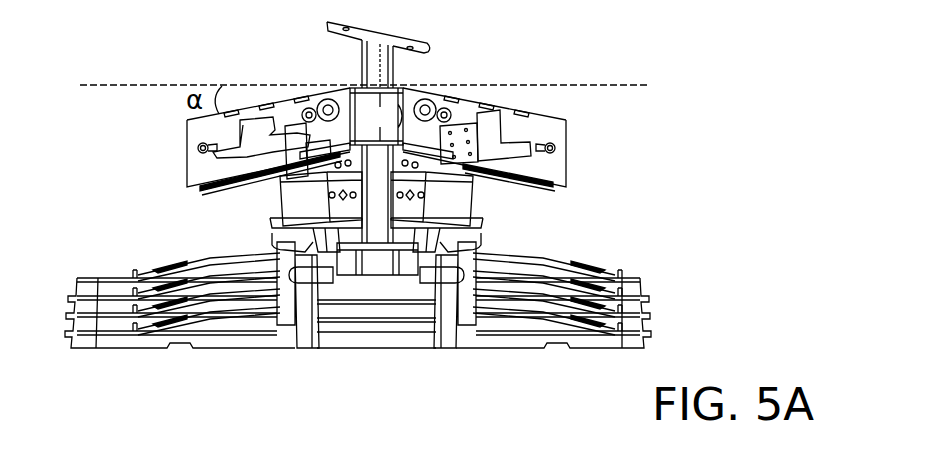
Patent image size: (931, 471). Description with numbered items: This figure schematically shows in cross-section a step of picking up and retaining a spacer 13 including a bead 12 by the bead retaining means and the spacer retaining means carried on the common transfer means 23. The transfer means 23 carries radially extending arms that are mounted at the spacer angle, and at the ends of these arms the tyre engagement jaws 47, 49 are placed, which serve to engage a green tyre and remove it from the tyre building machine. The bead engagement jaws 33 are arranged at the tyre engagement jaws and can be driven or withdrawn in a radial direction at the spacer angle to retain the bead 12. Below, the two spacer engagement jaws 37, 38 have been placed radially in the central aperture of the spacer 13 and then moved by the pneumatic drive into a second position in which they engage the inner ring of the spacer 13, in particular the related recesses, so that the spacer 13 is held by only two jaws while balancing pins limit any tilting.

The transfer means 23 is at (497, 110).
The tyre engagement jaw 49 is at (290, 206).
The tyre engagement jaw 47 is at (462, 202).
The bead engagement jaw 33 is at (313, 245).
The bead 12 is at (583, 258).
The spacer 13 is at (613, 288).
The spacer engagement jaw 37 is at (323, 287).
The spacer engagement jaw 38 is at (437, 280).